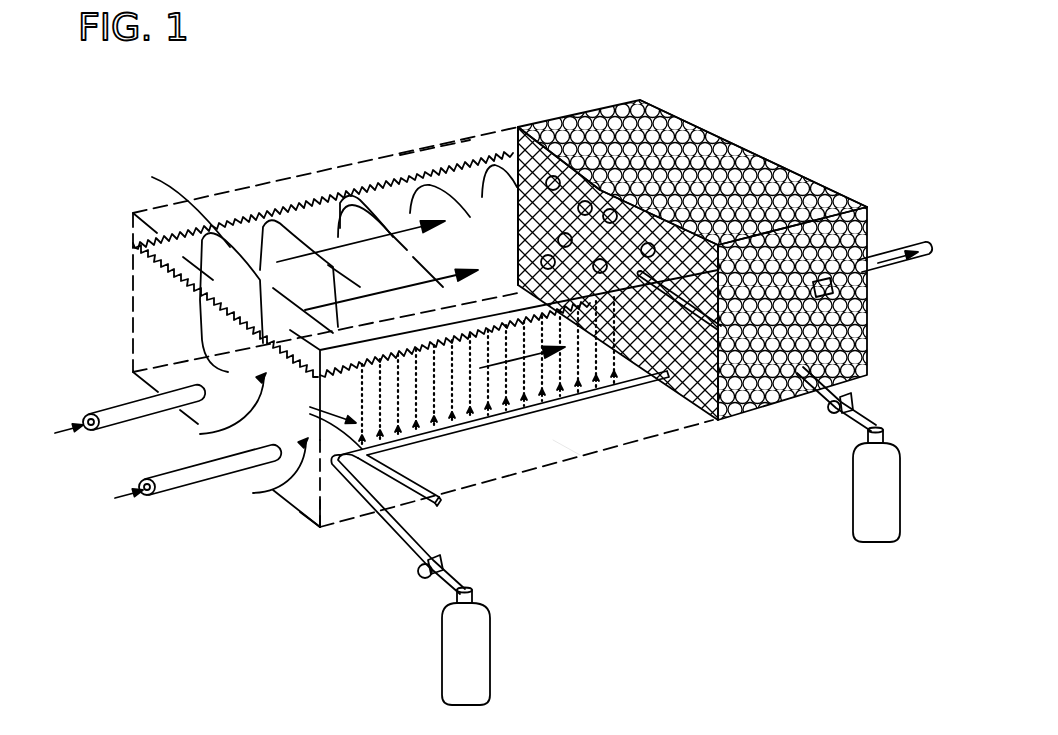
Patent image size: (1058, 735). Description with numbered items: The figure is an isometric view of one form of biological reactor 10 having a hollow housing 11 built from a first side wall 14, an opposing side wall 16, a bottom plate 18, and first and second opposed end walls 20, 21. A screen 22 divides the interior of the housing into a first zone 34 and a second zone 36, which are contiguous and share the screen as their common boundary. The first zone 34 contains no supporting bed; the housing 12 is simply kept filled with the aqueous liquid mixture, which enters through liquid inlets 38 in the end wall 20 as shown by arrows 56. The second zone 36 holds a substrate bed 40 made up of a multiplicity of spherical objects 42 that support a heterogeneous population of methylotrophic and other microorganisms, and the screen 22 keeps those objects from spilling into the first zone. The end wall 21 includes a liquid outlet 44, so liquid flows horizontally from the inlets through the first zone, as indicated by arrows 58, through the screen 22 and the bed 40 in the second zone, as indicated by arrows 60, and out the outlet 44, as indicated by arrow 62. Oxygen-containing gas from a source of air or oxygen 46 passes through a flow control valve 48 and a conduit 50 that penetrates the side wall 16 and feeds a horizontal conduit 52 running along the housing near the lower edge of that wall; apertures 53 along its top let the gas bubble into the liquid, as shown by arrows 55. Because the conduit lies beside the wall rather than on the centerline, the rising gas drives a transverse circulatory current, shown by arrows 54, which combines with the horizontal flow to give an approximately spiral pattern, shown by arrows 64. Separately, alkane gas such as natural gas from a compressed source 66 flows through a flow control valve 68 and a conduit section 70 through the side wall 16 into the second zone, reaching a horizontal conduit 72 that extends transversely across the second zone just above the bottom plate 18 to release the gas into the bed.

The biological reactor 10 is at (97, 163).
The hollow housing 11 is at (305, 522).
The housing 12 is at (398, 157).
The first side wall 14 is at (428, 160).
The opposing side wall 16 is at (554, 440).
The bottom plate 18 is at (534, 456).
The first end wall 20 is at (147, 313).
The second end wall 21 is at (703, 122).
The screen 22 is at (505, 130).
The first zone 34 is at (255, 233).
The second zone 36 is at (638, 105).
The liquid inlets 38 is at (118, 410).
The substrate bed 40 is at (760, 185).
The spherical objects 42 is at (818, 192).
The liquid outlet 44 is at (927, 248).
The source of air or oxygen 46 is at (443, 642).
The flow control valve 48 is at (420, 574).
The conduit 50 is at (397, 540).
The horizontal conduit 52 is at (452, 500).
The apertures 53 is at (434, 506).
The arrows 54 is at (230, 247).
The arrows 55 is at (321, 419).
The arrows 56 is at (200, 432).
The arrows 58 is at (390, 290).
The arrows 60 is at (515, 229).
The arrow 62 is at (893, 264).
The arrows 64 is at (462, 440).
The source 66 is at (853, 497).
The flow control valve 68 is at (850, 396).
The conduit section 70 is at (821, 406).
The horizontal conduit 72 is at (692, 386).